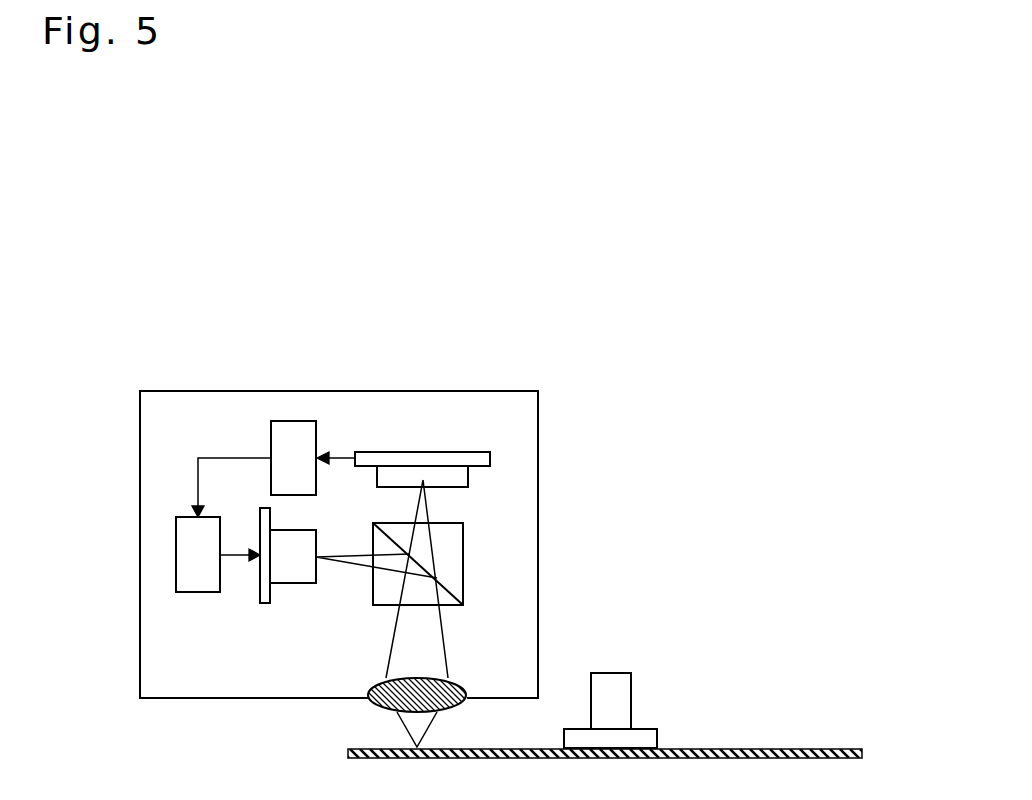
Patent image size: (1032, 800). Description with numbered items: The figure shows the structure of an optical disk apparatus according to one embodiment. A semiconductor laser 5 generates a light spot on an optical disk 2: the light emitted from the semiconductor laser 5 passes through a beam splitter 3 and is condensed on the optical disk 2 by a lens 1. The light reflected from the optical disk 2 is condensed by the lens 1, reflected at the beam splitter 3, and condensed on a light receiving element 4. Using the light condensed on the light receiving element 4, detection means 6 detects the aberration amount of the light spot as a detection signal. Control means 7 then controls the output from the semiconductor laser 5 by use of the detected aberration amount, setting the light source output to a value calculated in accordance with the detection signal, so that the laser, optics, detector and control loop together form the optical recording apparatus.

The lens 1 is at (450, 680).
The optical disk 2 is at (770, 749).
The beam splitter 3 is at (463, 563).
The light receiving element 4 is at (422, 450).
The semiconductor laser 5 is at (293, 583).
The detection means 6 is at (292, 420).
The control means 7 is at (176, 555).